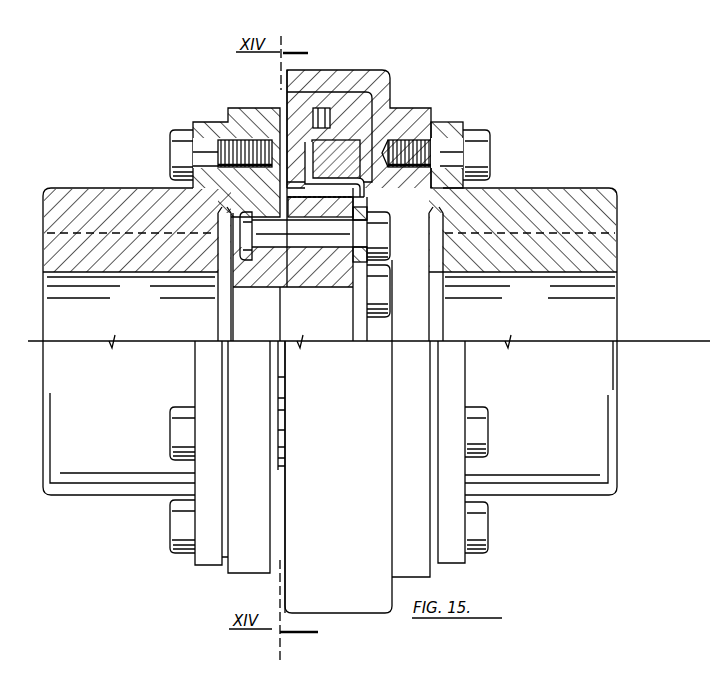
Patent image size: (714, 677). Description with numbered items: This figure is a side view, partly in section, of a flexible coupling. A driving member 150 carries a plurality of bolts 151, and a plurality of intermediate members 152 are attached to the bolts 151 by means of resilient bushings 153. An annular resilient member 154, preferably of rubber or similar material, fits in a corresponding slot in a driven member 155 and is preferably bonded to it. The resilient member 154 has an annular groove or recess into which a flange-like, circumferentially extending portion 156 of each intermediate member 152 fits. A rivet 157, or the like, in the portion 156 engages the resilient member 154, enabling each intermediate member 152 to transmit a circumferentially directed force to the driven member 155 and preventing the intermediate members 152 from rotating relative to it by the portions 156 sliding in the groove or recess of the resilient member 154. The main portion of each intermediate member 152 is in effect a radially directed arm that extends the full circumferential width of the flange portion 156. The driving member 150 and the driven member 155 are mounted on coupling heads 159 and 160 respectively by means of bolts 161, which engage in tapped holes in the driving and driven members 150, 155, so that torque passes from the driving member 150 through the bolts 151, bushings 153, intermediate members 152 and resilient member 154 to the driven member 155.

The driving member 150 is at (247, 109).
The bolts 151 is at (300, 237).
The intermediate members 152 is at (290, 123).
The resilient bushings 153 is at (352, 208).
The annular resilient member 154 is at (397, 106).
The driven member 155 is at (435, 113).
The flange-like circumferentially extending portion 156 is at (362, 108).
The rivet 157 is at (328, 106).
The coupling head 159 is at (100, 186).
The coupling head 160 is at (560, 194).
The bolts 161 is at (170, 148).